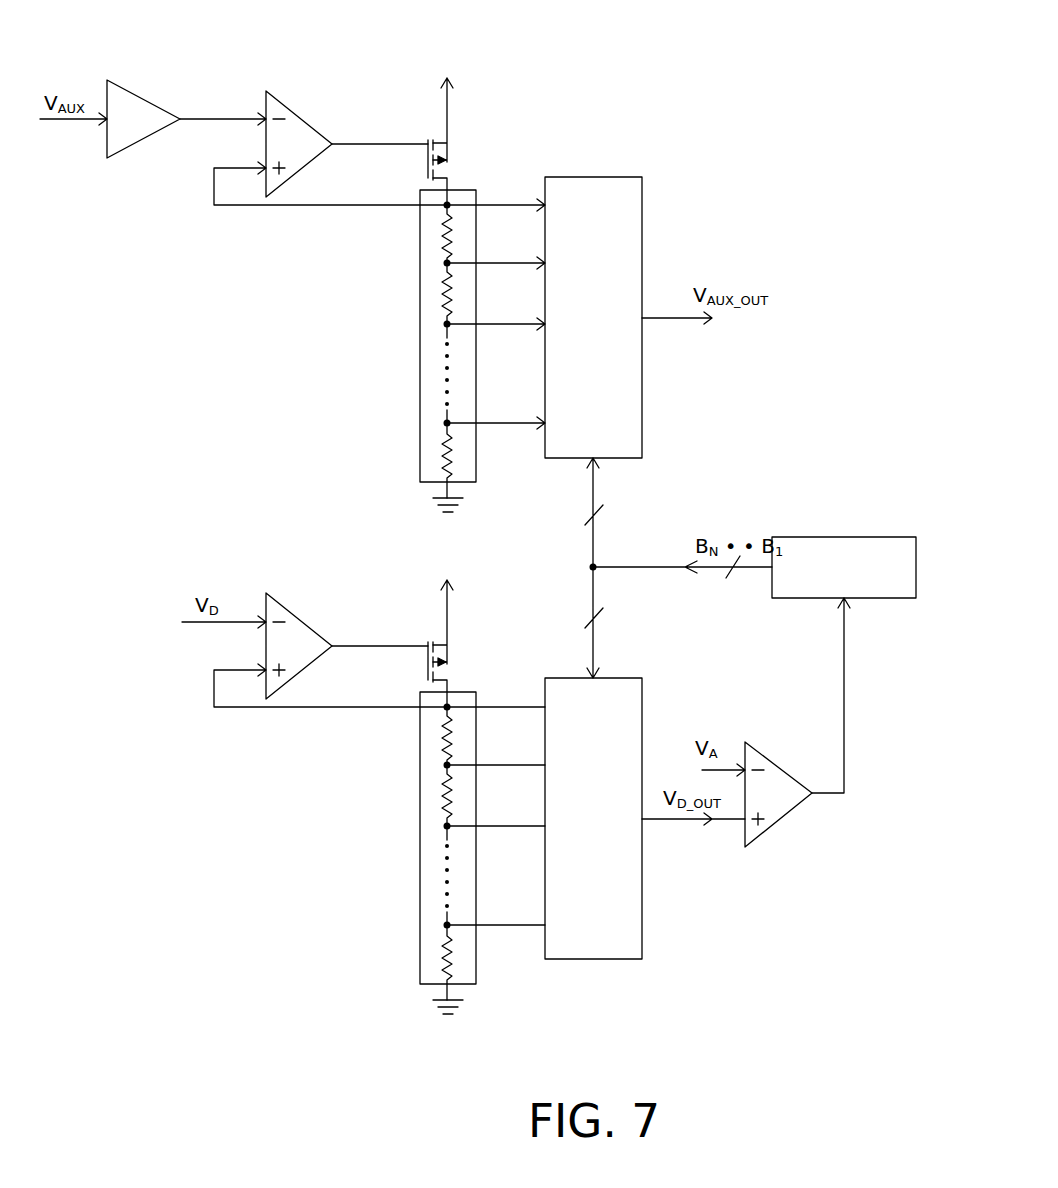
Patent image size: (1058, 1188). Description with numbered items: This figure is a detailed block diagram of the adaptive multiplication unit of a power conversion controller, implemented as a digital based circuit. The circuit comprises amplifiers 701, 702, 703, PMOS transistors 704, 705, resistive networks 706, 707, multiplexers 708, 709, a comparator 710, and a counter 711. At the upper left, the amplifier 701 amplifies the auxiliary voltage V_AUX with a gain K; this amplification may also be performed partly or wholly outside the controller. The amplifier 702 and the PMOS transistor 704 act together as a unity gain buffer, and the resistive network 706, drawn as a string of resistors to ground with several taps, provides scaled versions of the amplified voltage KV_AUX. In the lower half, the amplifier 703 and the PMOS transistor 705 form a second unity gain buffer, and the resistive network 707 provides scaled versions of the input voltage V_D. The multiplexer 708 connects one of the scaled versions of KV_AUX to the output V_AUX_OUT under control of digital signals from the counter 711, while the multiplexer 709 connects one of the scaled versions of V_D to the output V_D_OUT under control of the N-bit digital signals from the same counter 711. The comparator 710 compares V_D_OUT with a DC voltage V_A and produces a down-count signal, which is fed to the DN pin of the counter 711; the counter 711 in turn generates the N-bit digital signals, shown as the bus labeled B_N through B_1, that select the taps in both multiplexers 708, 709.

The amplifier 701 is at (150, 113).
The amplifier 702 is at (293, 120).
The amplifier 703 is at (303, 632).
The PMOS transistor 704 is at (457, 153).
The PMOS transistor 705 is at (453, 661).
The resistive network 706 is at (425, 308).
The resistive network 707 is at (420, 807).
The multiplexer 708 is at (597, 188).
The multiplexer 709 is at (642, 917).
The comparator 710 is at (783, 810).
The counter 711 is at (842, 540).